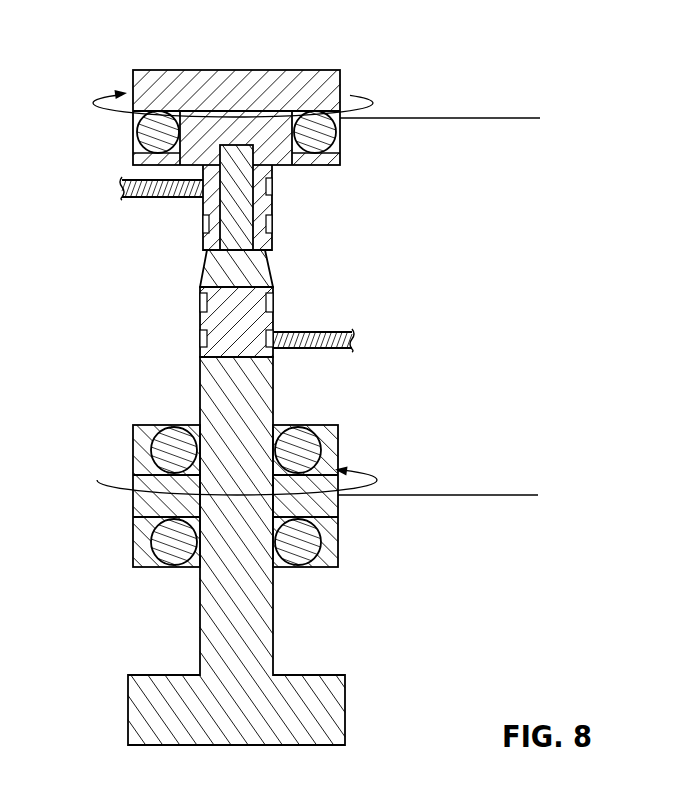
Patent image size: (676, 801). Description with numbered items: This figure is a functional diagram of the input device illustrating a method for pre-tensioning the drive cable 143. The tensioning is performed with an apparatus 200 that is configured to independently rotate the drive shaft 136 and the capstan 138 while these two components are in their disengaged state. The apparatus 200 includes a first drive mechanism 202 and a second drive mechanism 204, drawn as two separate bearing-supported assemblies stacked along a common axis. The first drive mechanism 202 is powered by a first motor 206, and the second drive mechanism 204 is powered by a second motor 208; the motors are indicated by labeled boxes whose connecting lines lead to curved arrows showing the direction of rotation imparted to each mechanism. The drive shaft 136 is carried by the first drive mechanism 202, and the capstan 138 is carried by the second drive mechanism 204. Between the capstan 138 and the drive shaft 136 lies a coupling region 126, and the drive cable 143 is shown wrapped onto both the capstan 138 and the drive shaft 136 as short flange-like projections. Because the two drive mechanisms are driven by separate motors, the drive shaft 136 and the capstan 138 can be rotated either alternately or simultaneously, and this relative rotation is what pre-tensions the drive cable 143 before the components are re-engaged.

The apparatus 200 is at (148, 38).
The first drive mechanism 202 is at (287, 70).
The second drive mechanism 204 is at (282, 423).
The first motor 206 is at (556, 134).
The second motor 208 is at (553, 510).
The coupling 126 is at (295, 290).
The drive shaft 136 is at (273, 637).
The capstan 138 is at (272, 206).
The drive cable 143 is at (152, 200).